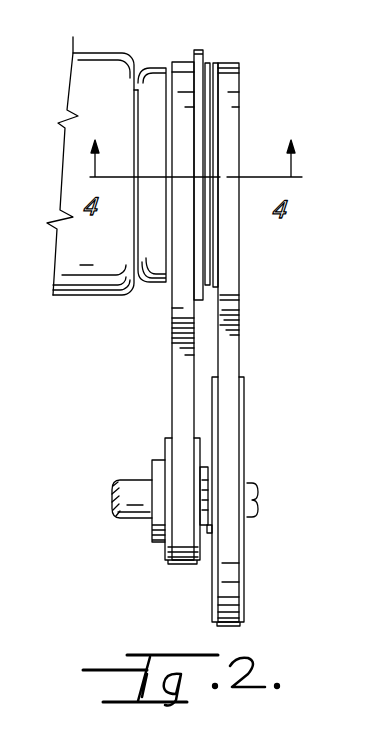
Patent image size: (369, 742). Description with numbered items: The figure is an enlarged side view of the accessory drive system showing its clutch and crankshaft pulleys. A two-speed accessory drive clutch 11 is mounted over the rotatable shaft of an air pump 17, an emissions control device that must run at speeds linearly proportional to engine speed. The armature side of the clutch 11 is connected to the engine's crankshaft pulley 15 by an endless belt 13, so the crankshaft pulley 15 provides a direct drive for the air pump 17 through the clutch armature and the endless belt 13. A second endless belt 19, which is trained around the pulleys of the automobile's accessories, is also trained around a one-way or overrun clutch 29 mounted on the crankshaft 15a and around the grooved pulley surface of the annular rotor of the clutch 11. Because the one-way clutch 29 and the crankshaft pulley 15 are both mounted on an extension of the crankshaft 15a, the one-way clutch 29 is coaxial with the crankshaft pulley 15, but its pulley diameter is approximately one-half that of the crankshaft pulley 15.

The two-speed accessory drive clutch 11 is at (243, 78).
The endless belt 13 is at (238, 323).
The crankshaft pulley 15 is at (242, 582).
The crankshaft 15a is at (135, 483).
The air pump 17 is at (92, 70).
The second endless belt 19 is at (178, 371).
The one-way clutch 29 is at (153, 525).